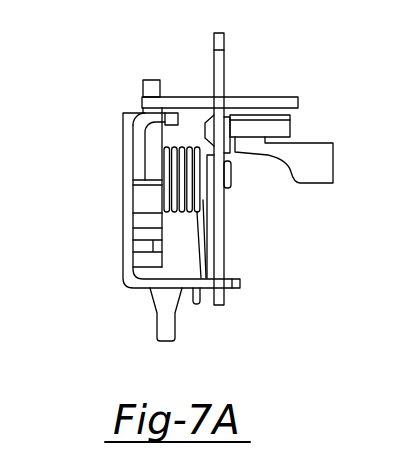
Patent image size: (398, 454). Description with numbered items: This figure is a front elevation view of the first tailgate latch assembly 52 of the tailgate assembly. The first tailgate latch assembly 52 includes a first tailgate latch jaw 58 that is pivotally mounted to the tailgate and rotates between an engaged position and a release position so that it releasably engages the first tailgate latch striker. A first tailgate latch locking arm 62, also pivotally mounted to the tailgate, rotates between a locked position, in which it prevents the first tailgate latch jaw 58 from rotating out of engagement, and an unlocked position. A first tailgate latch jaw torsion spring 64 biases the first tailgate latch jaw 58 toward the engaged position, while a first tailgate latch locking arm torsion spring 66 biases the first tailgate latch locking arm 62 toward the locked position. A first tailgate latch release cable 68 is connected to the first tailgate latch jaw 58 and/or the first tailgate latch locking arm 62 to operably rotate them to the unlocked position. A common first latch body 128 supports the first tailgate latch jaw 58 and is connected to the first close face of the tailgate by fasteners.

The first tailgate latch assembly 52 is at (60, 98).
The first tailgate latch jaw 58 is at (147, 168).
The first tailgate latch locking arm 62 is at (150, 88).
The first tailgate latch jaw torsion spring 64 is at (183, 213).
The first tailgate latch locking arm torsion spring 66 is at (133, 135).
The first tailgate latch release cable 68 is at (278, 128).
The common first latch body 128 is at (127, 275).